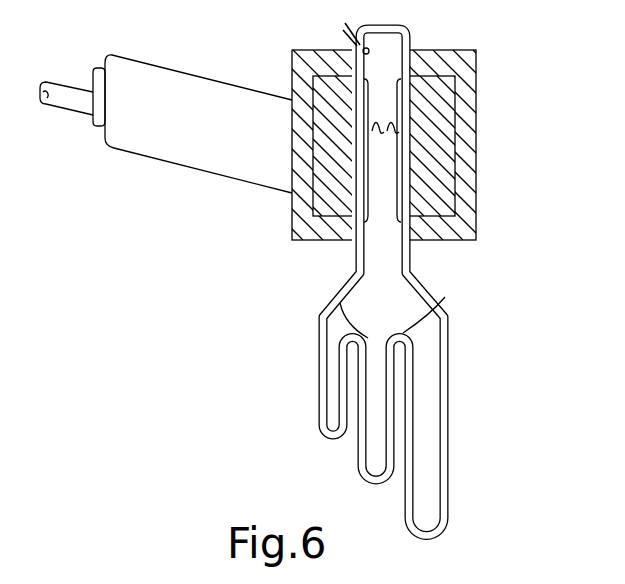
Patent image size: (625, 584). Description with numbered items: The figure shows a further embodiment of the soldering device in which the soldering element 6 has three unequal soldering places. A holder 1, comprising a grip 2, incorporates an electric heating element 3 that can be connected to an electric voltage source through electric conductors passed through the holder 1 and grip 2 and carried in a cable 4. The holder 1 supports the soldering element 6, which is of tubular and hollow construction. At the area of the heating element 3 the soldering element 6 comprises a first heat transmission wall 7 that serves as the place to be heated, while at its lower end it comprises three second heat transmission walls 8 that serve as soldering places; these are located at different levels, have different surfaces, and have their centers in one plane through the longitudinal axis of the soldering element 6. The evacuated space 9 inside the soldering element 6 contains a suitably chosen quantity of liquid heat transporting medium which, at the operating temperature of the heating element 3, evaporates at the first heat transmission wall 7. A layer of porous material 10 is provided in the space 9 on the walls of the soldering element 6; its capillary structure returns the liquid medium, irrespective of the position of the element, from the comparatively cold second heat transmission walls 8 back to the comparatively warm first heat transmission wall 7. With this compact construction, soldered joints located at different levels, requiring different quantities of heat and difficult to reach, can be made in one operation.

The holder 1 is at (470, 185).
The grip 2 is at (222, 157).
The electric heating element 3 is at (437, 200).
The cable 4 is at (70, 98).
The soldering element 6 is at (392, 28).
The first heat transmission wall 7 is at (382, 150).
The second heat transmission wall 8 is at (408, 538).
The evacuated space 9 is at (391, 281).
The layer of porous material 10 is at (433, 308).